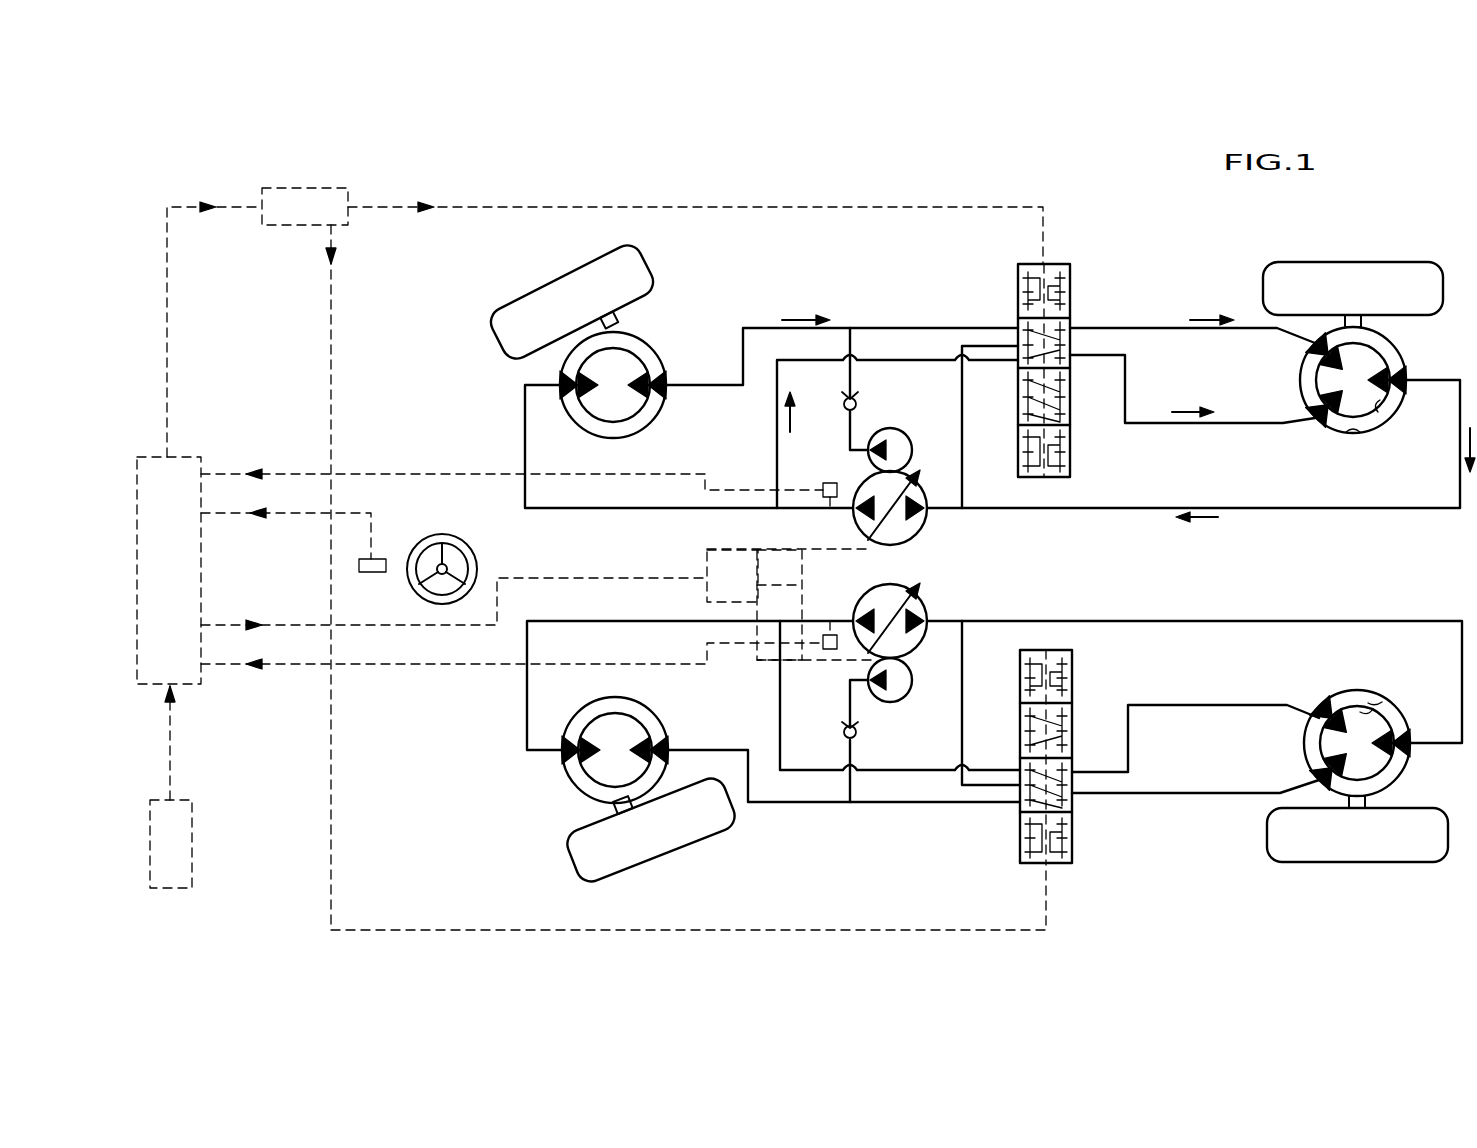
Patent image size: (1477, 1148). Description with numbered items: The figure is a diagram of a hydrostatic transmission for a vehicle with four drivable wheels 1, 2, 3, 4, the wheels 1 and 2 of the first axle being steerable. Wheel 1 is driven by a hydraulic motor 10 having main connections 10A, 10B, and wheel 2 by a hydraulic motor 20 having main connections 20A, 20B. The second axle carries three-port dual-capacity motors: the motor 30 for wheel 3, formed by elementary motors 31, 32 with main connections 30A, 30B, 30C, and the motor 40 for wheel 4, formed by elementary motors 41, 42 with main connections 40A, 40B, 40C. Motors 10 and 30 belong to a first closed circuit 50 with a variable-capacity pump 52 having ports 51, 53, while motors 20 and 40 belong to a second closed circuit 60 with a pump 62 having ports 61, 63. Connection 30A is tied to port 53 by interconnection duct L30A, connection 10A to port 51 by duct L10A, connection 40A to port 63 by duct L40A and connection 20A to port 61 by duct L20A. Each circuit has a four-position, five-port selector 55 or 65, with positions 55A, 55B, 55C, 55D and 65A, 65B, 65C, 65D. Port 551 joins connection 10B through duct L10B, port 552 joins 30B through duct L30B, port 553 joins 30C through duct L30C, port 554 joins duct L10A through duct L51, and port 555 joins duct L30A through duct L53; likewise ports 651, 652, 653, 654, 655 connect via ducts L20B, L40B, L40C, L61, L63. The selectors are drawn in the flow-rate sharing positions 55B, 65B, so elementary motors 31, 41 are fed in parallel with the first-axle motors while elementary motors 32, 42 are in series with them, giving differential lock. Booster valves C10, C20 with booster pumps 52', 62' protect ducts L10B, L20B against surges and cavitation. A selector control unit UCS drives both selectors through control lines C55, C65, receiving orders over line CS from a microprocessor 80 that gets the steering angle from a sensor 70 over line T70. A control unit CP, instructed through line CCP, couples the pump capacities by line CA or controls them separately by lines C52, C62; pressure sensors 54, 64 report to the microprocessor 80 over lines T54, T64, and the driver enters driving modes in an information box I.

The drivable wheel 1 is at (545, 300).
The drivable wheel 2 is at (582, 860).
The drivable wheel 3 is at (1380, 268).
The drivable wheel 4 is at (1375, 852).
The hydraulic motor 10 is at (640, 428).
The first main connection 10A is at (565, 395).
The second main connection 10B is at (675, 385).
The hydraulic motor 20 is at (632, 698).
The first main connection 20A is at (567, 755).
The second main connection 20B is at (680, 750).
The dual-capacity hydraulic motor 30 is at (1333, 436).
The first main connection 30A is at (1440, 362).
The second main connection 30B is at (1322, 405).
The third main connection 30C is at (1312, 352).
The first elementary motor 31 is at (1385, 405).
The second elementary motor 32 is at (1355, 434).
The dual-capacity hydraulic motor 40 is at (1345, 678).
The first main connection 40A is at (1415, 748).
The second main connection 40B is at (1300, 718).
The third main connection 40C is at (1308, 765).
The first elementary motor 41 is at (1380, 718).
The second elementary motor 42 is at (1376, 702).
The first closed circuit 50 is at (925, 302).
The pump port 51 is at (856, 512).
The variable cylinder capacity hydraulic pump 52 is at (902, 519).
The booster pump 52' is at (890, 428).
The pump port 53 is at (927, 512).
The pressure sensor 54 is at (830, 483).
The selector 55 is at (1068, 245).
The first selector position 55A is at (1070, 275).
The second selector position 55B is at (1060, 325).
The third selector position 55C is at (1066, 420).
The fourth selector position 55D is at (1068, 462).
The first selector port 551 is at (1018, 312).
The second selector port 552 is at (1070, 348).
The third selector port 553 is at (1072, 330).
The fourth selector port 554 is at (1018, 372).
The fifth selector port 555 is at (1018, 346).
The second closed circuit 60 is at (888, 835).
The pump port 61 is at (858, 612).
The variable cylinder capacity hydraulic pump 62 is at (923, 609).
The booster pump 62' is at (912, 671).
The pump port 63 is at (928, 620).
The pressure sensor 64 is at (828, 635).
The selector 65 is at (1020, 890).
The first selector position 65A is at (1060, 865).
The second selector position 65B is at (1070, 830).
The third selector position 65C is at (1066, 715).
The fourth selector position 65D is at (1060, 660).
The first selector port 651 is at (1020, 812).
The second selector port 652 is at (1072, 765).
The third selector port 653 is at (1072, 802).
The fourth selector port 654 is at (1020, 762).
The fifth selector port 655 is at (1020, 792).
The steering angle sensor 70 is at (370, 573).
The microprocessor 80 is at (188, 684).
The information box I is at (175, 850).
The selector control unit UCS is at (305, 206).
The control line CS is at (167, 338).
The control line C55 is at (760, 208).
The control line C65 is at (331, 850).
The booster valve C10 is at (838, 404).
The booster valve C20 is at (838, 725).
The decoupled control line C52 is at (800, 548).
The decoupled control line C62 is at (790, 662).
The pump cylinder capacity control unit CP is at (716, 555).
The coupling line CA is at (779, 605).
The control instruction line CCP is at (300, 624).
The information transmission line T54 is at (374, 474).
The information transmission line T64 is at (400, 666).
The transmission line T70 is at (232, 515).
The duct L10A is at (525, 450).
The duct L10B is at (768, 328).
The duct L20A is at (527, 690).
The duct L20B is at (845, 805).
The interconnection duct L30A is at (1060, 510).
The duct L30B is at (1232, 424).
The duct L30C is at (1160, 330).
The duct L40A is at (1182, 621).
The duct L40B is at (1185, 705).
The duct L40C is at (1260, 795).
The duct L51 is at (777, 445).
The duct L53 is at (958, 428).
The duct L61 is at (945, 768).
The duct L63 is at (962, 680).